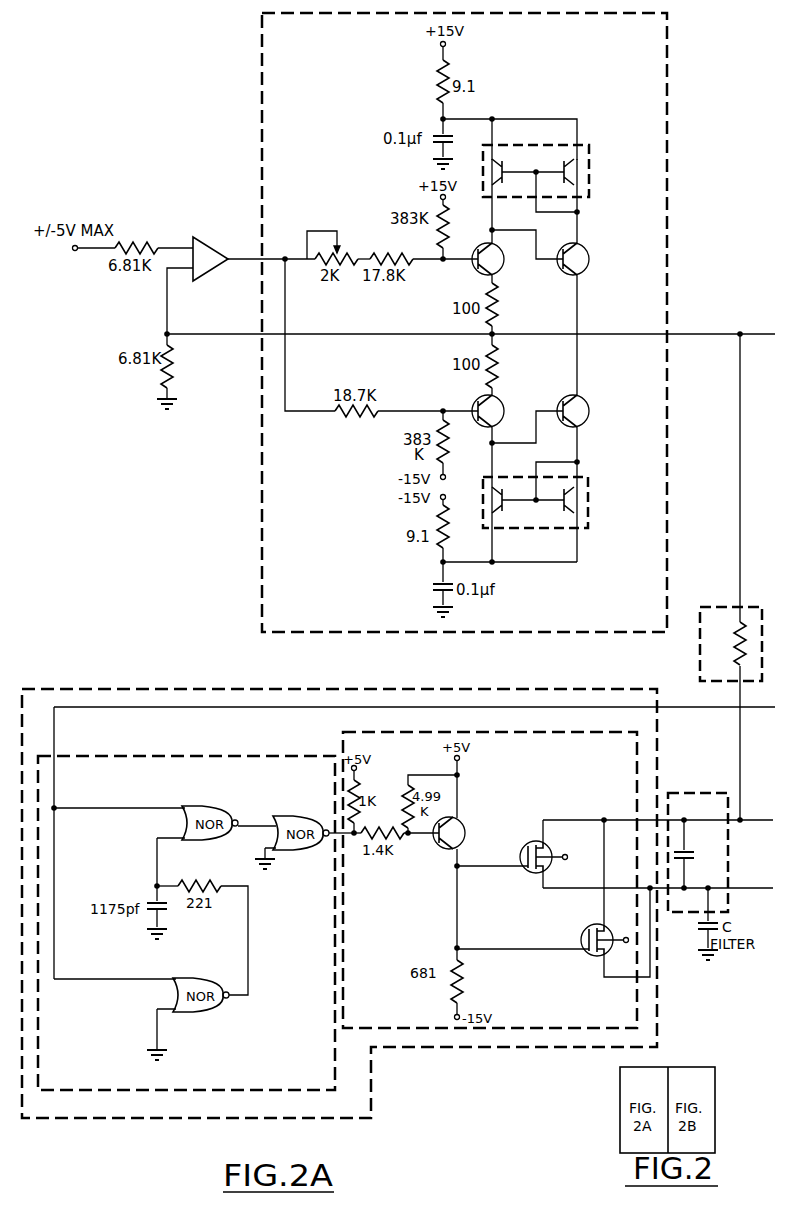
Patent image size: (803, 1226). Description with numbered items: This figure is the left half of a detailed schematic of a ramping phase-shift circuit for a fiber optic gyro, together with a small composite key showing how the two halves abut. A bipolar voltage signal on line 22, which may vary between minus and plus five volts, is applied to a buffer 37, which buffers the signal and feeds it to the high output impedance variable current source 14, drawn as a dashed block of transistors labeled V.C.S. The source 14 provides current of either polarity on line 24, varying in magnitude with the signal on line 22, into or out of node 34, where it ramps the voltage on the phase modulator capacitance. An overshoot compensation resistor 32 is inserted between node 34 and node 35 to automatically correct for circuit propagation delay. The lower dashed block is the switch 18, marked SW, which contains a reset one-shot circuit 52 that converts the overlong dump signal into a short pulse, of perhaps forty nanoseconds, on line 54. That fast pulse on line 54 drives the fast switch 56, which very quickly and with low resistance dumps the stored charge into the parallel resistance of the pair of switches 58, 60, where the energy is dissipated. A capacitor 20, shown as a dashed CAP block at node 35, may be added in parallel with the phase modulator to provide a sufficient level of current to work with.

The high output impedance variable current source 14 is at (262, 515).
The switch 18 is at (92, 689).
The capacitor 20 is at (693, 793).
The line 22 is at (87, 252).
The line 24 is at (643, 320).
The overshoot compensation resistor 32 is at (700, 607).
The node 34 is at (740, 334).
The node 35 is at (764, 806).
The buffer 37 is at (212, 281).
The reset one-shot circuit 52 is at (190, 756).
The line 54 is at (332, 838).
The fast switch 56 is at (352, 732).
The switch 58 is at (528, 869).
The switch 60 is at (588, 928).